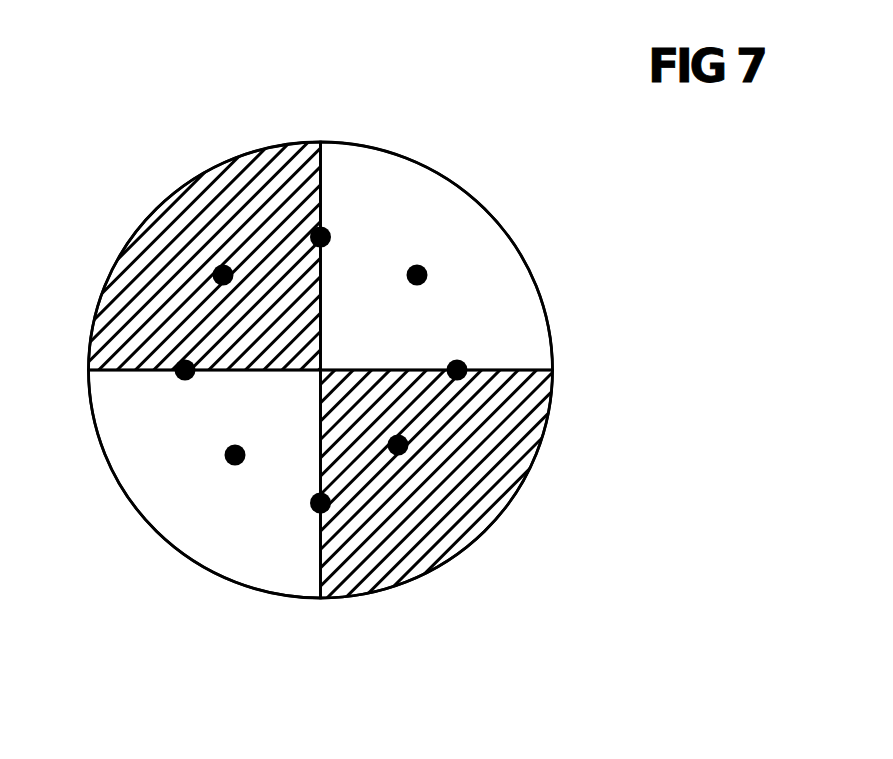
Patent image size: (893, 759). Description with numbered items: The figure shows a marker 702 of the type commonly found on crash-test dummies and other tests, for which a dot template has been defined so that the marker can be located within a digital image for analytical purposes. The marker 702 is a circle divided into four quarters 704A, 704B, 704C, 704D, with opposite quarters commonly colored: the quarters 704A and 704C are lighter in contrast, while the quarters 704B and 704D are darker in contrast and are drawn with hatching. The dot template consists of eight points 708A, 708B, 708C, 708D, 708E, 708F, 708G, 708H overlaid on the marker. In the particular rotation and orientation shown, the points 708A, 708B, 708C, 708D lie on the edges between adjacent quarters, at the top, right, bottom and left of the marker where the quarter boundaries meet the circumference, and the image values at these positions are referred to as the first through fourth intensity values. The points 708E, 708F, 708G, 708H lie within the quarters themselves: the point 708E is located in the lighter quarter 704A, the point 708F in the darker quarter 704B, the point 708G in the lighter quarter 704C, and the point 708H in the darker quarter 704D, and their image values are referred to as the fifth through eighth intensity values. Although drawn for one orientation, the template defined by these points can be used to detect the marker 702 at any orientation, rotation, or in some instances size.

The marker 702 is at (413, 100).
The quarter 704A is at (499, 255).
The quarter 704B is at (532, 450).
The quarter 704C is at (128, 459).
The quarter 704D is at (146, 242).
The point 708A is at (318, 235).
The point 708B is at (458, 370).
The point 708C is at (320, 505).
The point 708D is at (185, 370).
The point 708E is at (417, 275).
The point 708F is at (398, 445).
The point 708G is at (235, 455).
The point 708H is at (223, 275).